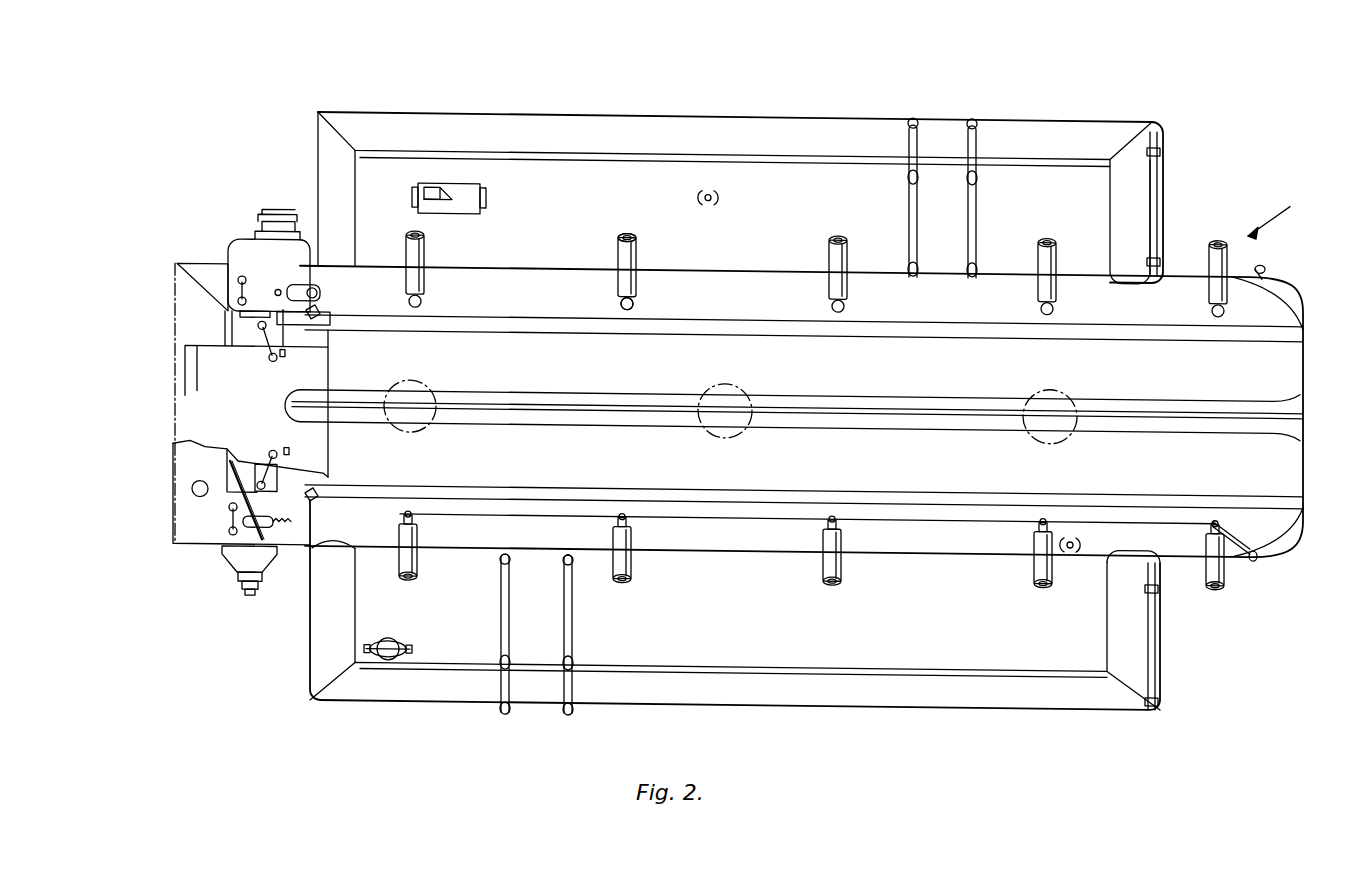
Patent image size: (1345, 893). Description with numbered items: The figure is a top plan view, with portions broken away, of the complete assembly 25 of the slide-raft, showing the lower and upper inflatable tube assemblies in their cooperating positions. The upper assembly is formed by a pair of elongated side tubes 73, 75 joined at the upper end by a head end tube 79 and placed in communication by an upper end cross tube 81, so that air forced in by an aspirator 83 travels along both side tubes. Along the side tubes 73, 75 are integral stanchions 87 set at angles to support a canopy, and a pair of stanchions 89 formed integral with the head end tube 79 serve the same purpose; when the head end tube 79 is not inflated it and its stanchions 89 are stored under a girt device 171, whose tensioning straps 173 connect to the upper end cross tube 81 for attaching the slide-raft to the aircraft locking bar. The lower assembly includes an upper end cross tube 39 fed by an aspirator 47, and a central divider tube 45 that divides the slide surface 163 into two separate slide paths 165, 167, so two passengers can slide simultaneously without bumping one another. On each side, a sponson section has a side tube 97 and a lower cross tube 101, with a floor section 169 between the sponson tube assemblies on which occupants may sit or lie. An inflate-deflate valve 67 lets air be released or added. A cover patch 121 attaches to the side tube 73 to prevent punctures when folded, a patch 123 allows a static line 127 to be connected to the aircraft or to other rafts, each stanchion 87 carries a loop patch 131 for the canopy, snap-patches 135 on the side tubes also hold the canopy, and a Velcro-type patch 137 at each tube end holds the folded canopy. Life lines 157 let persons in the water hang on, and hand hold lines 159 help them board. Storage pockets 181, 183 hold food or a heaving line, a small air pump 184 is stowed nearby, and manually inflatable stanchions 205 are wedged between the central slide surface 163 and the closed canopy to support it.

The complete assembly 25 is at (1283, 205).
The upper end cross tube 39 is at (226, 553).
The central divider tube 45 is at (735, 390).
The aspirator 47 is at (248, 597).
The inflate-deflate valve 67 is at (718, 186).
The side tube 73 is at (478, 283).
The side tube 75 is at (745, 538).
The head end tube 79 is at (185, 458).
The upper end cross tube 81 is at (332, 476).
The aspirator 83 is at (262, 225).
The integral stanchions 87 is at (637, 258).
The stanchions 89 is at (190, 488).
The side tube 97 is at (527, 121).
The lower cross tube 101 is at (334, 170).
The cover patch 121 is at (222, 312).
The patch 123 is at (262, 540).
The static line 127 is at (240, 496).
The loop patch 131 is at (630, 230).
The snap-patch 135 is at (634, 298).
The Velcro-type patch 137 is at (238, 290).
The life lines 157 is at (1168, 176).
The hand hold lines 159 is at (976, 126).
The slide surface 163 is at (608, 360).
The slide path 165 is at (966, 365).
The slide path 167 is at (964, 465).
The floor section 169 is at (598, 183).
The girt device 171 is at (205, 373).
The tensioning straps 173 is at (228, 332).
The storage pocket 181 is at (478, 196).
The storage pocket 183 is at (386, 658).
The small air pump 184 is at (312, 286).
The manually inflatable stanchions 205 is at (430, 383).